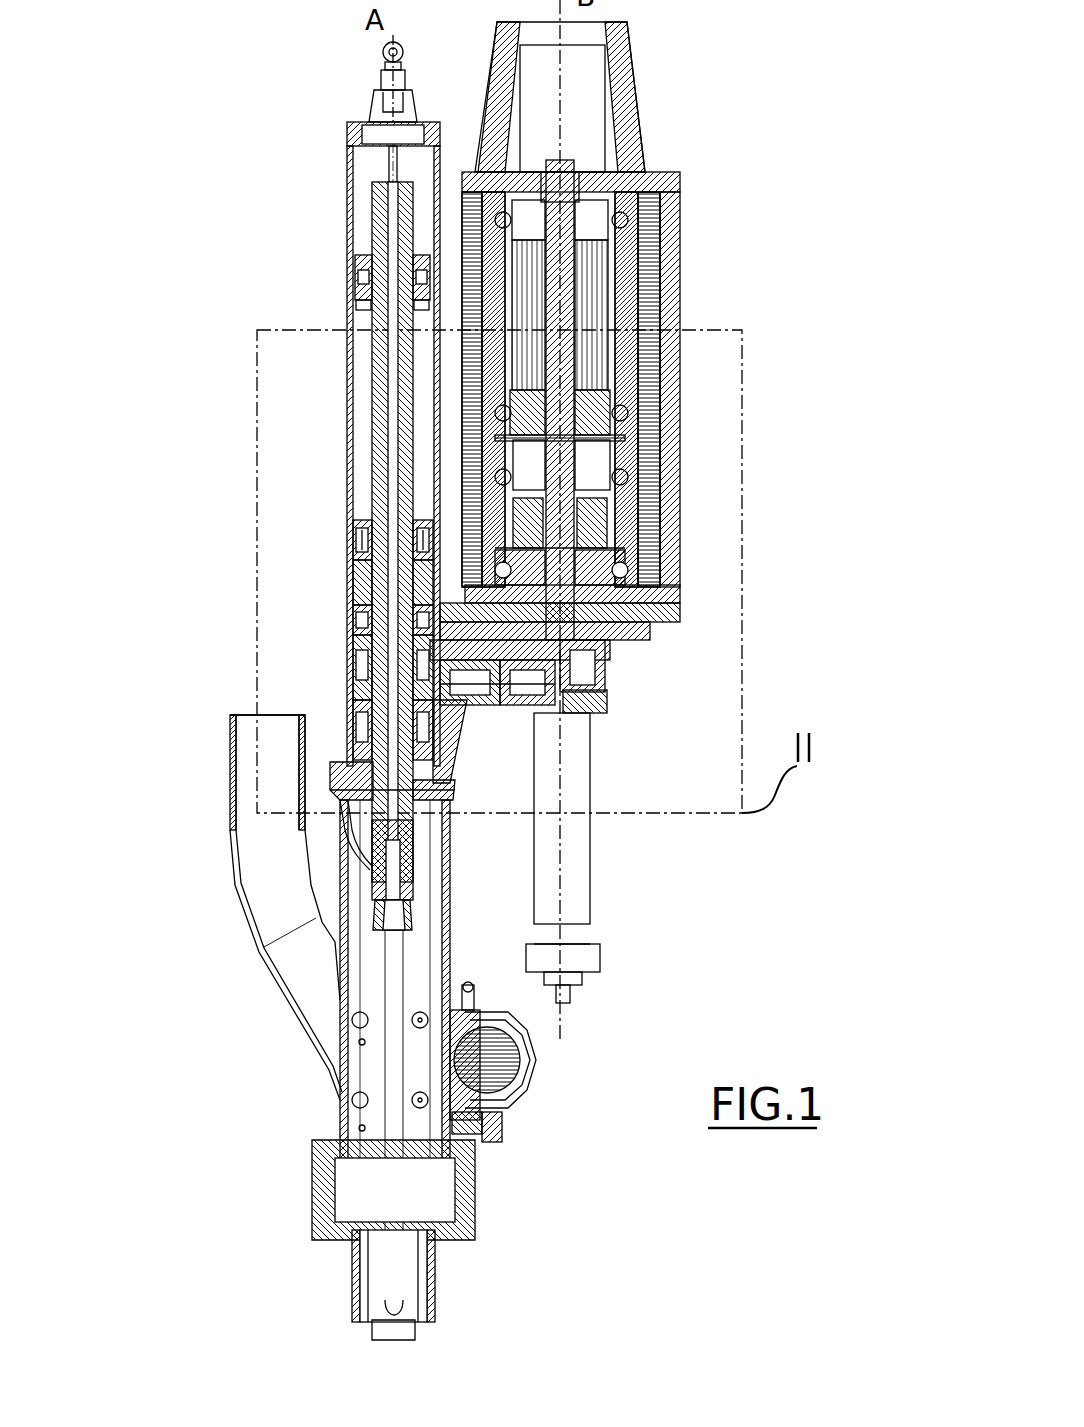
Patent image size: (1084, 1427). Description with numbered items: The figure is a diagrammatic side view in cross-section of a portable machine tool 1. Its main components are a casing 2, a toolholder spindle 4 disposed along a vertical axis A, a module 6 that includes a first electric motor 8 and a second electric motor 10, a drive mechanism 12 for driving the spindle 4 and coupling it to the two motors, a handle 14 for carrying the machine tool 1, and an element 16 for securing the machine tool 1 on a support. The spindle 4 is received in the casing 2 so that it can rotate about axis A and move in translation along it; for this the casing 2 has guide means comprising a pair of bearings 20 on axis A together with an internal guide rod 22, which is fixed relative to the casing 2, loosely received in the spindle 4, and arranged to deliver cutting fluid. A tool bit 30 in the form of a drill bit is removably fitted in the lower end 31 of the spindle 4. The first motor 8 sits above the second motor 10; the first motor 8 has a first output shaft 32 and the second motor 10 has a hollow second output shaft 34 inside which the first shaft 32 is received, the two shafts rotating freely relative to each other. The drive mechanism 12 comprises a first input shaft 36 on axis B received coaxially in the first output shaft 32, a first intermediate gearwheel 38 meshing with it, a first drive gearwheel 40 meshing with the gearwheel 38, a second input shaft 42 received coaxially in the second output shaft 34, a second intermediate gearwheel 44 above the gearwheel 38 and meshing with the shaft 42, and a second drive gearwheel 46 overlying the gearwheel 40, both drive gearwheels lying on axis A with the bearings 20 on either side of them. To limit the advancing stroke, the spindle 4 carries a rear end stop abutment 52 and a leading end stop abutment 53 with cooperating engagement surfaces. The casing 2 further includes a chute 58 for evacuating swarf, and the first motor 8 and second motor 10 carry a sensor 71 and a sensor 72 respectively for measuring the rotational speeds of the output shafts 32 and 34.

The portable machine tool 1 is at (285, 437).
The casing 2 is at (348, 498).
The toolholder spindle 4 is at (378, 456).
The module 6 is at (700, 396).
The first electric motor 8 is at (608, 318).
The second electric motor 10 is at (600, 520).
The drive mechanism 12 is at (630, 690).
The handle 14 is at (573, 895).
The securing element 16 is at (495, 1066).
The bearings 20 is at (338, 563).
The internal guide rod 22 is at (392, 155).
The tool bit 30 is at (397, 1225).
The lower end of the spindle 31 is at (410, 911).
The first output shaft 32 is at (598, 292).
The second output shaft 34 is at (592, 562).
The first input shaft 36 is at (575, 690).
The first intermediate gearwheel 38 is at (508, 680).
The first drive gearwheel 40 is at (358, 680).
The second input shaft 42 is at (582, 648).
The second intermediate gearwheel 44 is at (486, 668).
The second drive gearwheel 46 is at (362, 655).
The rear end stop abutment 52 is at (365, 295).
The leading end stop abutment 53 is at (408, 832).
The chute 58 is at (238, 900).
The sensor 71 is at (585, 200).
The sensor 72 is at (590, 460).